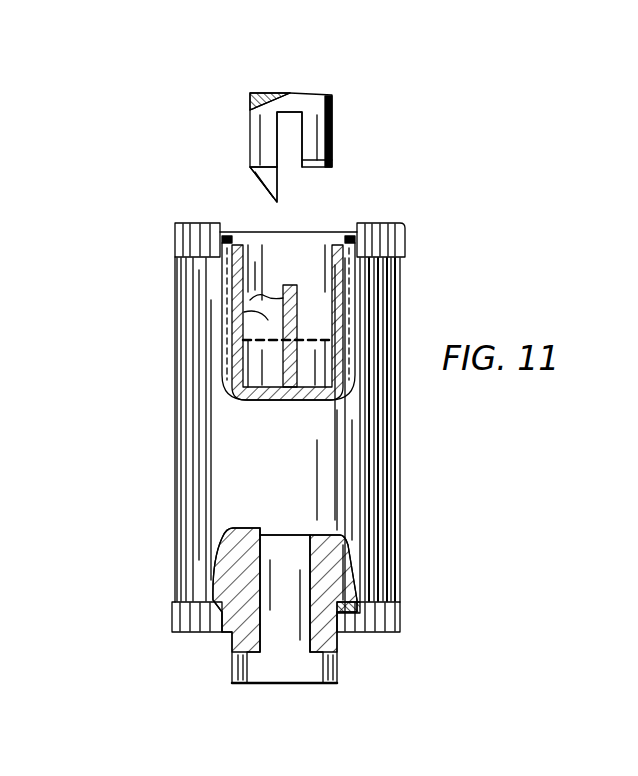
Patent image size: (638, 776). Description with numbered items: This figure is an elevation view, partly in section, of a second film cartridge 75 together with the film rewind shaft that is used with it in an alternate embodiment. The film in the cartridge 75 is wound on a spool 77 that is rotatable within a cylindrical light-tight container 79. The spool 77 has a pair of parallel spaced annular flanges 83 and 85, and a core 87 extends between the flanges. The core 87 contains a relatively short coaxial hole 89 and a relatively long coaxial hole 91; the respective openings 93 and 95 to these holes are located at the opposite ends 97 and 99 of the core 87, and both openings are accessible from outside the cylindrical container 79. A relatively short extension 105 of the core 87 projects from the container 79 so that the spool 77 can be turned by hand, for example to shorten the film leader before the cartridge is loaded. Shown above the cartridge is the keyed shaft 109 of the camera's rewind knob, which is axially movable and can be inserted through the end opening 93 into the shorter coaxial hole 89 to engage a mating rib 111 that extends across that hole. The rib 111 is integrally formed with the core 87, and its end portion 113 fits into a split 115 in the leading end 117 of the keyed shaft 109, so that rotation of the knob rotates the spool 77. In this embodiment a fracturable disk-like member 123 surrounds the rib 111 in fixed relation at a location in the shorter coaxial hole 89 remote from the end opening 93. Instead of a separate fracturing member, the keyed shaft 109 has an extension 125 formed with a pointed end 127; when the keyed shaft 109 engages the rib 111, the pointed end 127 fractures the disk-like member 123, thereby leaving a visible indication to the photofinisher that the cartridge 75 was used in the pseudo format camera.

The film cartridge 75 is at (158, 432).
The spool 77 is at (273, 398).
The cylindrical light-tight container 79 is at (400, 468).
The annular flange 83 is at (360, 232).
The annular flange 85 is at (339, 614).
The core 87 is at (333, 368).
The shorter coaxial hole 89 is at (262, 256).
The longer coaxial hole 91 is at (277, 555).
The end opening 93 is at (262, 231).
The end opening 95 is at (283, 684).
The end of core 97 is at (380, 229).
The end of core 99 is at (362, 634).
The short extension 105 is at (232, 652).
The keyed shaft 109 is at (251, 92).
The rib 111 is at (256, 298).
The end portion of rib 113 is at (308, 248).
The split 115 is at (293, 160).
The leading end of keyed shaft 117 is at (318, 172).
The fracturable disk-like member 123 is at (268, 338).
The extension 125 is at (250, 169).
The pointed end 127 is at (275, 203).